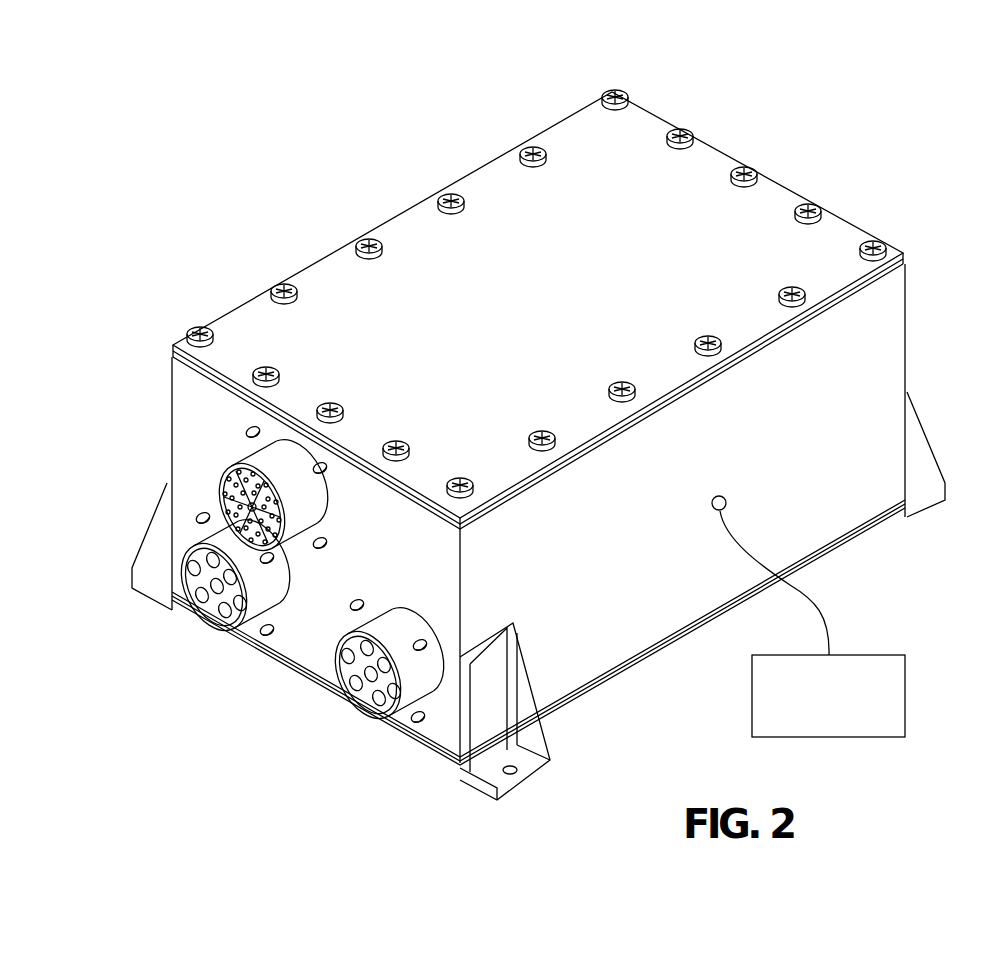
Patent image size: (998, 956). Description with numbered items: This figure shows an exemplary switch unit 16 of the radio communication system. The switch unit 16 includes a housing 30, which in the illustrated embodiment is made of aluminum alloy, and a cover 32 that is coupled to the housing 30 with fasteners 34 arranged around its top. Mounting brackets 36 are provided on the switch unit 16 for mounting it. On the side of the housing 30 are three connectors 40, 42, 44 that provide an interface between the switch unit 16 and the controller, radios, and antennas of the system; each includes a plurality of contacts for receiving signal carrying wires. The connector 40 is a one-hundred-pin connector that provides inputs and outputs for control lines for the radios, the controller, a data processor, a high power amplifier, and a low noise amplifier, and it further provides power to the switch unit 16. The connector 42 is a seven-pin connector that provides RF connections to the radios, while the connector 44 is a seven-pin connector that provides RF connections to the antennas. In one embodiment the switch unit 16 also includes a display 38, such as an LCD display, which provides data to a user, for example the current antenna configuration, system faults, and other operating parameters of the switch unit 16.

The switch unit 16 is at (328, 209).
The housing 30 is at (888, 342).
The cover 32 is at (560, 122).
The fasteners 34 is at (812, 212).
The mounting brackets 36 is at (142, 545).
The display 38 is at (877, 655).
The connector 40 is at (226, 468).
The connector 42 is at (212, 628).
The connector 44 is at (366, 718).